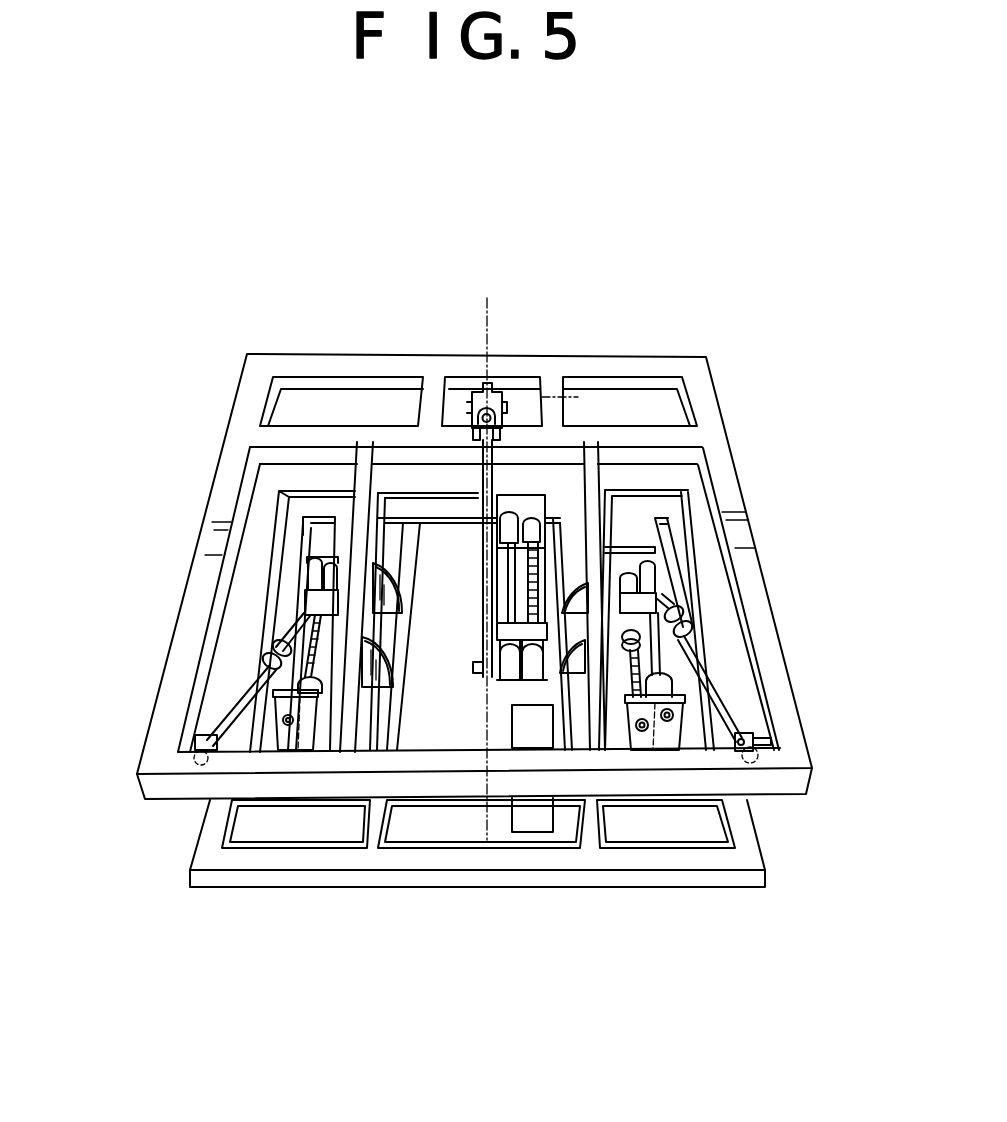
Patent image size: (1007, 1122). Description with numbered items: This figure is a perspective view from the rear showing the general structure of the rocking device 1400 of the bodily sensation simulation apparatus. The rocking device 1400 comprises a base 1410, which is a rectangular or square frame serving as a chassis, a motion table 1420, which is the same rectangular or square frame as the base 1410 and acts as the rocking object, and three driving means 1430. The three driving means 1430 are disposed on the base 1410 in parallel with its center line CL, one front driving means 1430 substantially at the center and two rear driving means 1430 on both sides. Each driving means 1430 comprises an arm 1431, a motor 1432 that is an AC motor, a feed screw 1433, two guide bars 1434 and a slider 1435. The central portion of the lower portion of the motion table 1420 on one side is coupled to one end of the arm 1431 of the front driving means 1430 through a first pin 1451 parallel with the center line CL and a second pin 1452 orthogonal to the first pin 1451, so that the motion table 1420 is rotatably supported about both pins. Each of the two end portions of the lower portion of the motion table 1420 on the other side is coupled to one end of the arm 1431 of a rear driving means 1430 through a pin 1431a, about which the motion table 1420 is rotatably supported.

The rocking device 1400 is at (331, 310).
The center line CL is at (484, 328).
The base 1410 is at (208, 858).
The motion table 1420 is at (250, 388).
The driving means 1430 is at (247, 622).
The arm 1431 is at (478, 513).
The pin 1431a is at (197, 740).
The motor 1432 is at (330, 528).
The feed screw 1433 is at (627, 660).
The guide bars 1434 is at (290, 648).
The slider 1435 is at (307, 595).
The first pin 1451 is at (493, 385).
The second pin 1452 is at (500, 407).